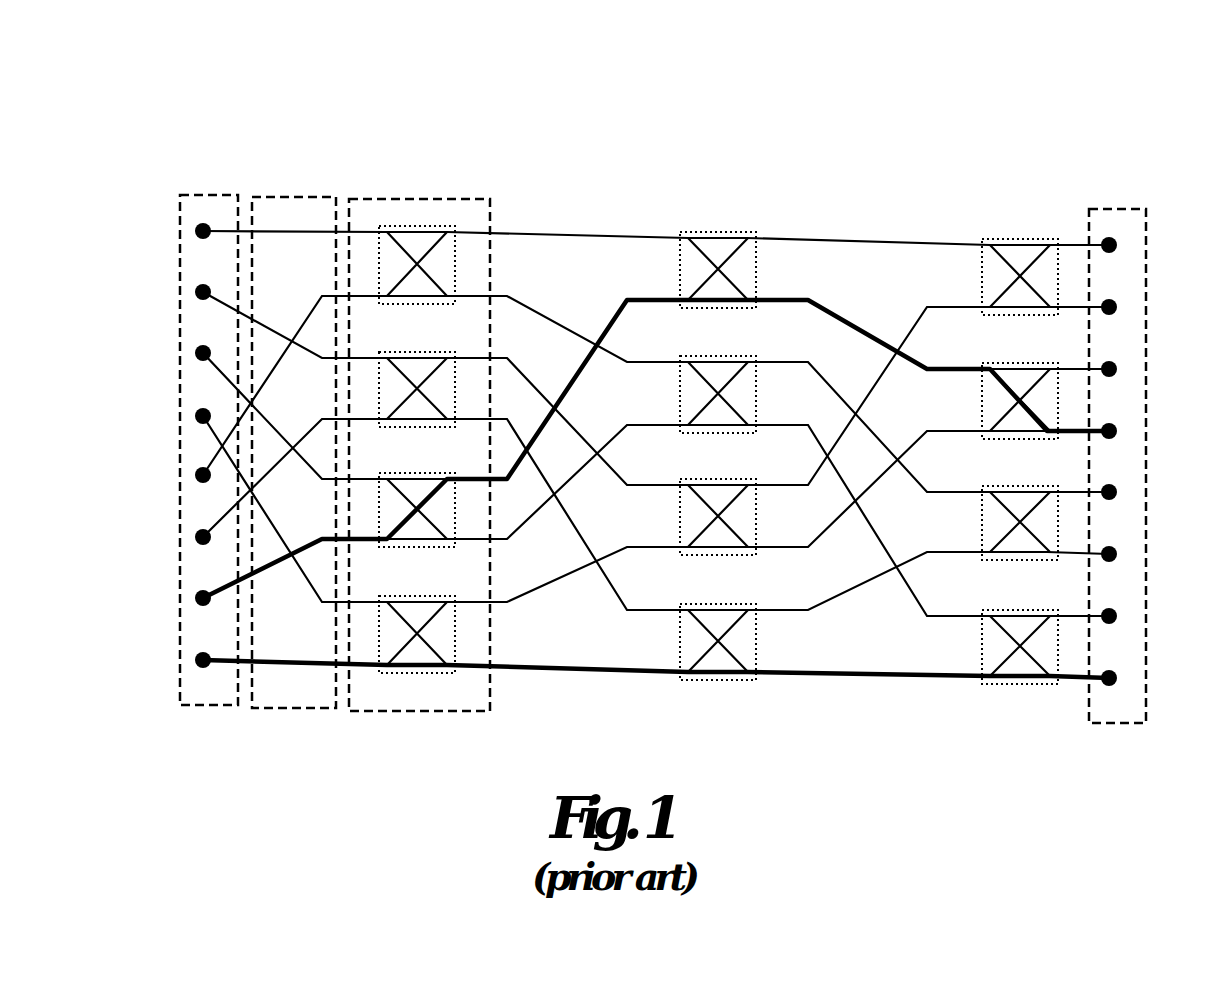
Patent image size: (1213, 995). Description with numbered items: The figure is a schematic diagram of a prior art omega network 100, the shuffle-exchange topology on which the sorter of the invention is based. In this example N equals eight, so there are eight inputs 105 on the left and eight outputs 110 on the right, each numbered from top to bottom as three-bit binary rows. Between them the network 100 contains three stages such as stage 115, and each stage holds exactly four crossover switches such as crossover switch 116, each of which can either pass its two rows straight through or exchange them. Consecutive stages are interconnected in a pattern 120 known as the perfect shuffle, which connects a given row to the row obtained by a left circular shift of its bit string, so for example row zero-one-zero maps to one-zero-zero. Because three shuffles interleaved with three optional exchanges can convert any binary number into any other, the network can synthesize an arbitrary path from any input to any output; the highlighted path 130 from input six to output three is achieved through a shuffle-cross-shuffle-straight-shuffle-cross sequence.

The omega network 100 is at (727, 90).
The inputs 105 is at (208, 195).
The outputs 110 is at (1115, 209).
The stage 115 is at (418, 199).
The crossover switch 116 is at (448, 258).
The perfect shuffle pattern 120 is at (291, 197).
The highlighted path 130 is at (617, 313).